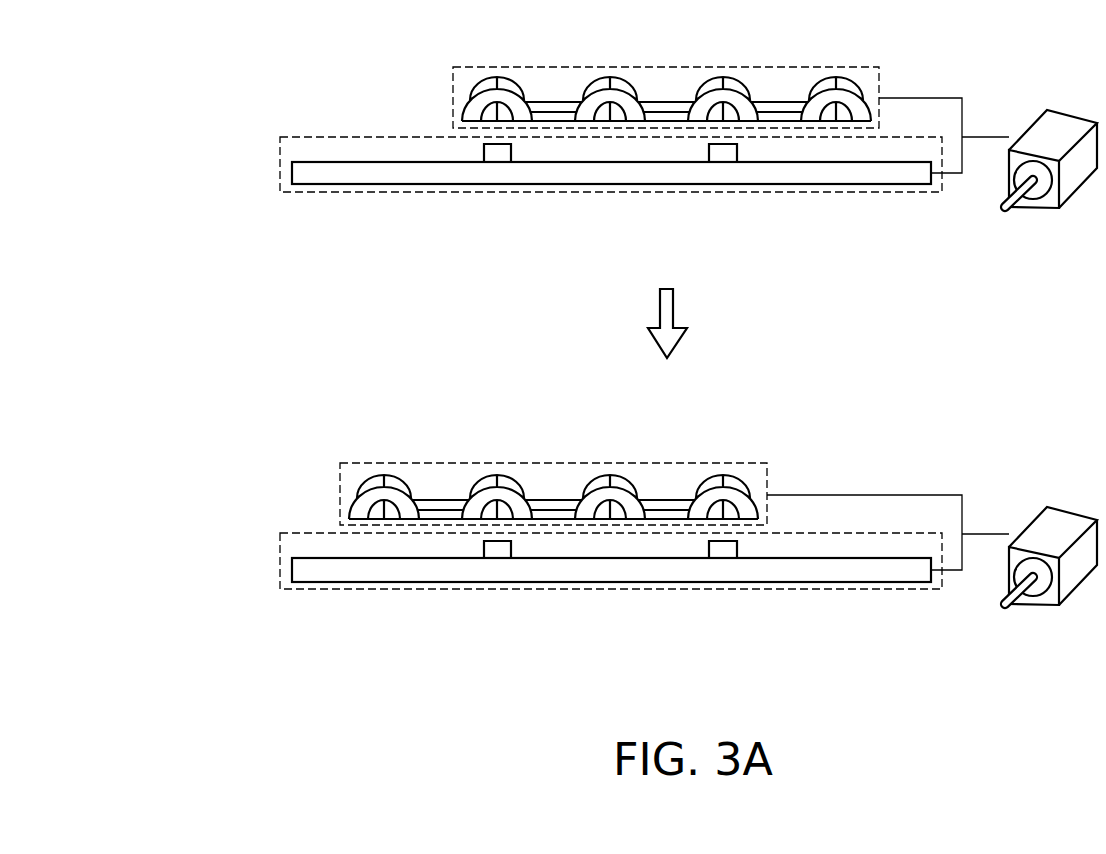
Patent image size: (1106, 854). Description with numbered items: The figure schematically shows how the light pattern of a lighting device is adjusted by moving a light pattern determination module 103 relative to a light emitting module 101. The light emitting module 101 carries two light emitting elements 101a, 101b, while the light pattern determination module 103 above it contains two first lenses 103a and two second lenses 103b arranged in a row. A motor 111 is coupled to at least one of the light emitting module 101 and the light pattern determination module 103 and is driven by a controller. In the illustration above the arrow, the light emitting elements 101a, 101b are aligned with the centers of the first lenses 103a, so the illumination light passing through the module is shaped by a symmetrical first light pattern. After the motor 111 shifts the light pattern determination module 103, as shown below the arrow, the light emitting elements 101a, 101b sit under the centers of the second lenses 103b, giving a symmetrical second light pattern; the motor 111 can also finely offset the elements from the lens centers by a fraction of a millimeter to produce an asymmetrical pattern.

The light emitting module 101 is at (280, 168).
The light emitting element 101a is at (496, 157).
The light emitting element 101b is at (722, 157).
The light pattern determination module 103 is at (572, 270).
The first lens 103a is at (506, 74).
The second lens 103b is at (619, 74).
The motor 111 is at (1070, 116).